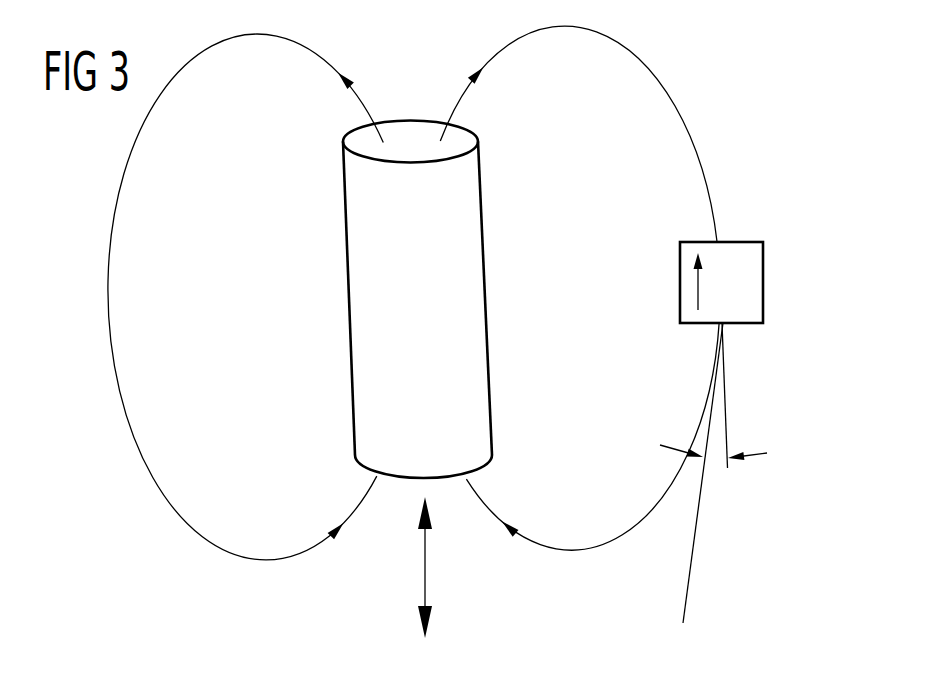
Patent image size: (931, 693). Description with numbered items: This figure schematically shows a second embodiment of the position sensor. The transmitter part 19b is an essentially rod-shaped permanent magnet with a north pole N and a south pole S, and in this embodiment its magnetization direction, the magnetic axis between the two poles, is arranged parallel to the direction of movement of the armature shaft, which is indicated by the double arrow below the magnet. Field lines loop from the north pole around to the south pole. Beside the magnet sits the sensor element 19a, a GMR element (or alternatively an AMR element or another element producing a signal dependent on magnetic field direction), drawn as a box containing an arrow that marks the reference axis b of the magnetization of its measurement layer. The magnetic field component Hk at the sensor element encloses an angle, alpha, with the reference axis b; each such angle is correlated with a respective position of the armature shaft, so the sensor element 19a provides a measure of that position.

The sensor element 19a is at (763, 283).
The transmitter part 19b is at (370, 288).
The reference axis b is at (697, 290).
The magnetic field component Hk is at (687, 583).